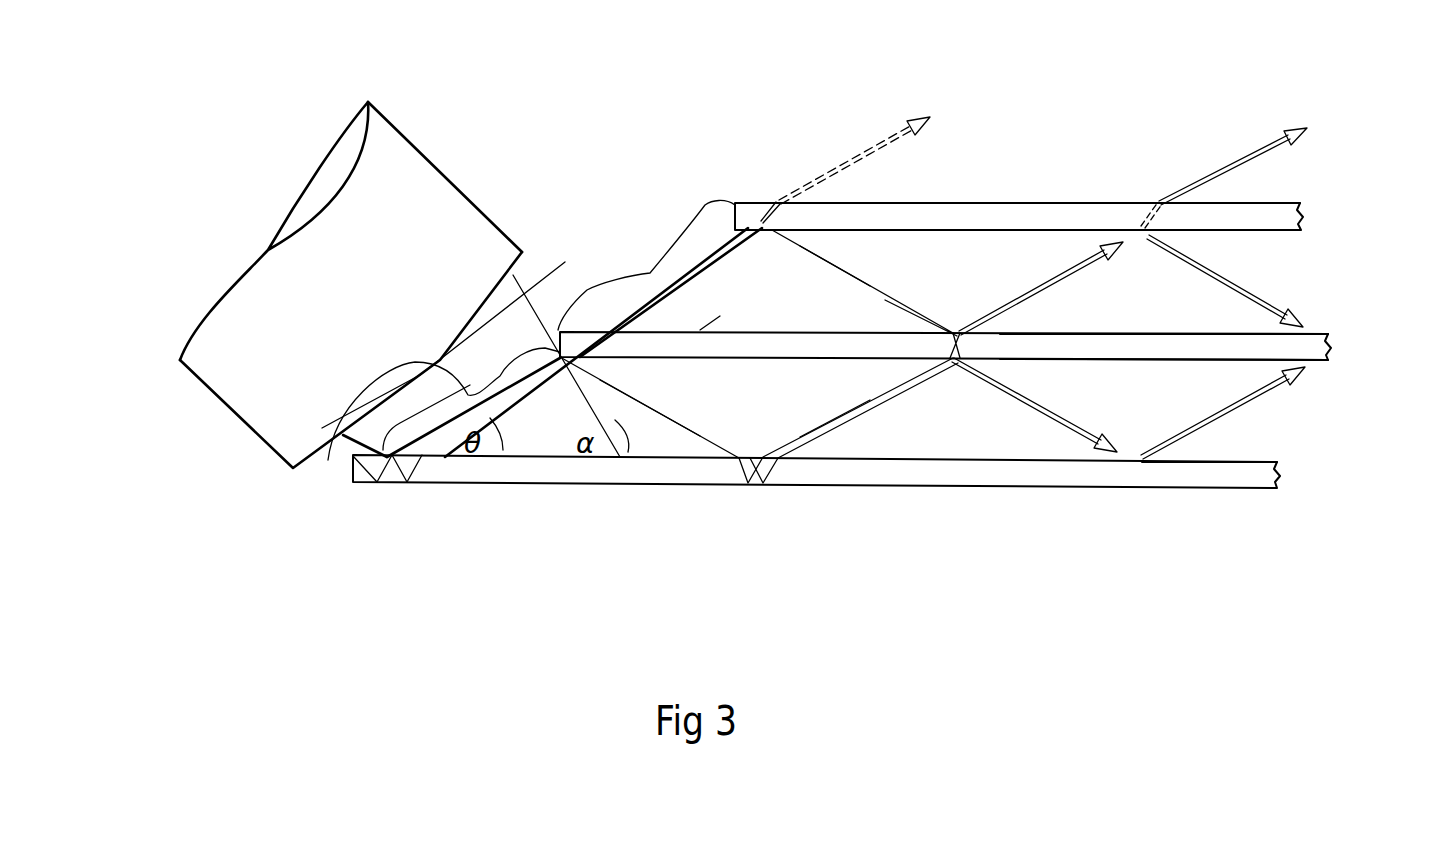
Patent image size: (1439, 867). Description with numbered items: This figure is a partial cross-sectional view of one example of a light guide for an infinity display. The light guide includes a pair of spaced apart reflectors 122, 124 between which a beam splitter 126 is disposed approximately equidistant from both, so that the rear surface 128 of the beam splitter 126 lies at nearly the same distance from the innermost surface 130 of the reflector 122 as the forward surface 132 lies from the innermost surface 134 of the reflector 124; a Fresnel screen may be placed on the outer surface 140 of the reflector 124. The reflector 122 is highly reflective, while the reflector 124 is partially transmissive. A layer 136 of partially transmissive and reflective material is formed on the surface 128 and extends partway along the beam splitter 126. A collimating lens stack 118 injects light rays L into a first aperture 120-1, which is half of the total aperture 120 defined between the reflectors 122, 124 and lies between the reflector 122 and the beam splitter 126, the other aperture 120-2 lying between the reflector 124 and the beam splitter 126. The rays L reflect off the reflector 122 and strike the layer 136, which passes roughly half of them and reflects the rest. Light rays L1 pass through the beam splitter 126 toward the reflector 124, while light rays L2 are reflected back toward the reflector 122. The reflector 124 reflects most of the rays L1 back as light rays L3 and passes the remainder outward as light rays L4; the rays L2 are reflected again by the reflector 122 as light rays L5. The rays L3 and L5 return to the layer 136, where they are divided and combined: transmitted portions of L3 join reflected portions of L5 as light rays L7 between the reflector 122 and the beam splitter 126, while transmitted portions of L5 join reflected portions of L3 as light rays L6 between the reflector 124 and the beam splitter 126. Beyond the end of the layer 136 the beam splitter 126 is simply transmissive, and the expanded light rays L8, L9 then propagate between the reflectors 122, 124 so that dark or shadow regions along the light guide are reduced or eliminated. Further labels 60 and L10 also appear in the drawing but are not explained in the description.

The light beam 60 is at (1115, 445).
The collimating lens stack 118 is at (430, 195).
The total aperture 120 is at (513, 275).
The first aperture 120-1 is at (515, 275).
The second aperture 120-2 is at (646, 276).
The reflector 122 is at (1163, 473).
The reflector 124 is at (1187, 213).
The beam splitter 126 is at (1307, 347).
The rear surface of beam splitter 128 is at (1313, 363).
The innermost surface of reflector 130 is at (1237, 458).
The forward surface of beam splitter 132 is at (1307, 335).
The innermost surface of reflector 134 is at (947, 232).
The layer of partially transmissive and reflective material 136 is at (828, 358).
The outer surface of reflector 140 is at (1112, 203).
The light rays L is at (558, 330).
The light rays L1 is at (712, 303).
The light rays L2 is at (665, 408).
The light rays L3 is at (854, 271).
The light rays L4 is at (854, 160).
The light rays L5 is at (857, 422).
The combined light rays L6 is at (1041, 288).
The combined light rays L7 is at (1034, 405).
The light rays L8 is at (1223, 413).
The light rays L9 is at (1225, 281).
The light ray L10 is at (1256, 177).